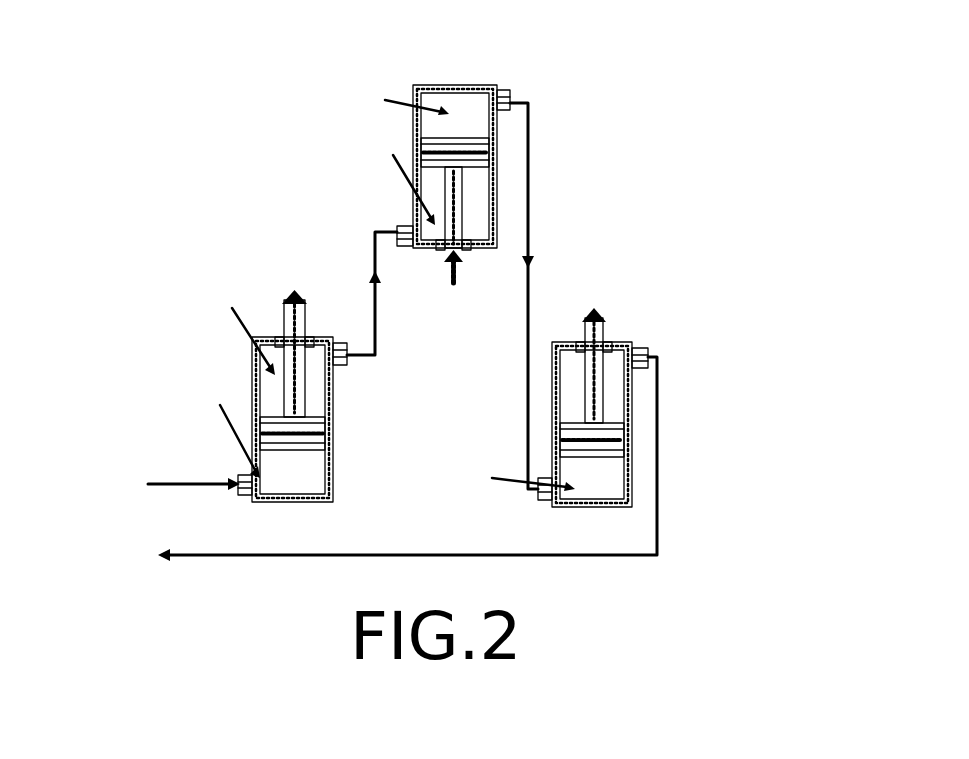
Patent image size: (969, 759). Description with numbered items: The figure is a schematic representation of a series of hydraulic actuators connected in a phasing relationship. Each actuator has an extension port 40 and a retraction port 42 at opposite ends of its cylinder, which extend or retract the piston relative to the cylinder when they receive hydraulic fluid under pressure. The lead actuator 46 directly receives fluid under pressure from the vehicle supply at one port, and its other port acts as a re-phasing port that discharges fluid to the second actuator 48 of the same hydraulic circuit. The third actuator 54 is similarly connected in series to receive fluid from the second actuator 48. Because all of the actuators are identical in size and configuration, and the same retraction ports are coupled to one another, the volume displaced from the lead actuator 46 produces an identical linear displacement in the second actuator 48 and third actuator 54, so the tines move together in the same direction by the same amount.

The extension port 40 is at (510, 95).
The retraction port 42 is at (400, 226).
The lead actuator 46 is at (252, 378).
The second actuator 48 is at (413, 118).
The third actuator 54 is at (635, 408).